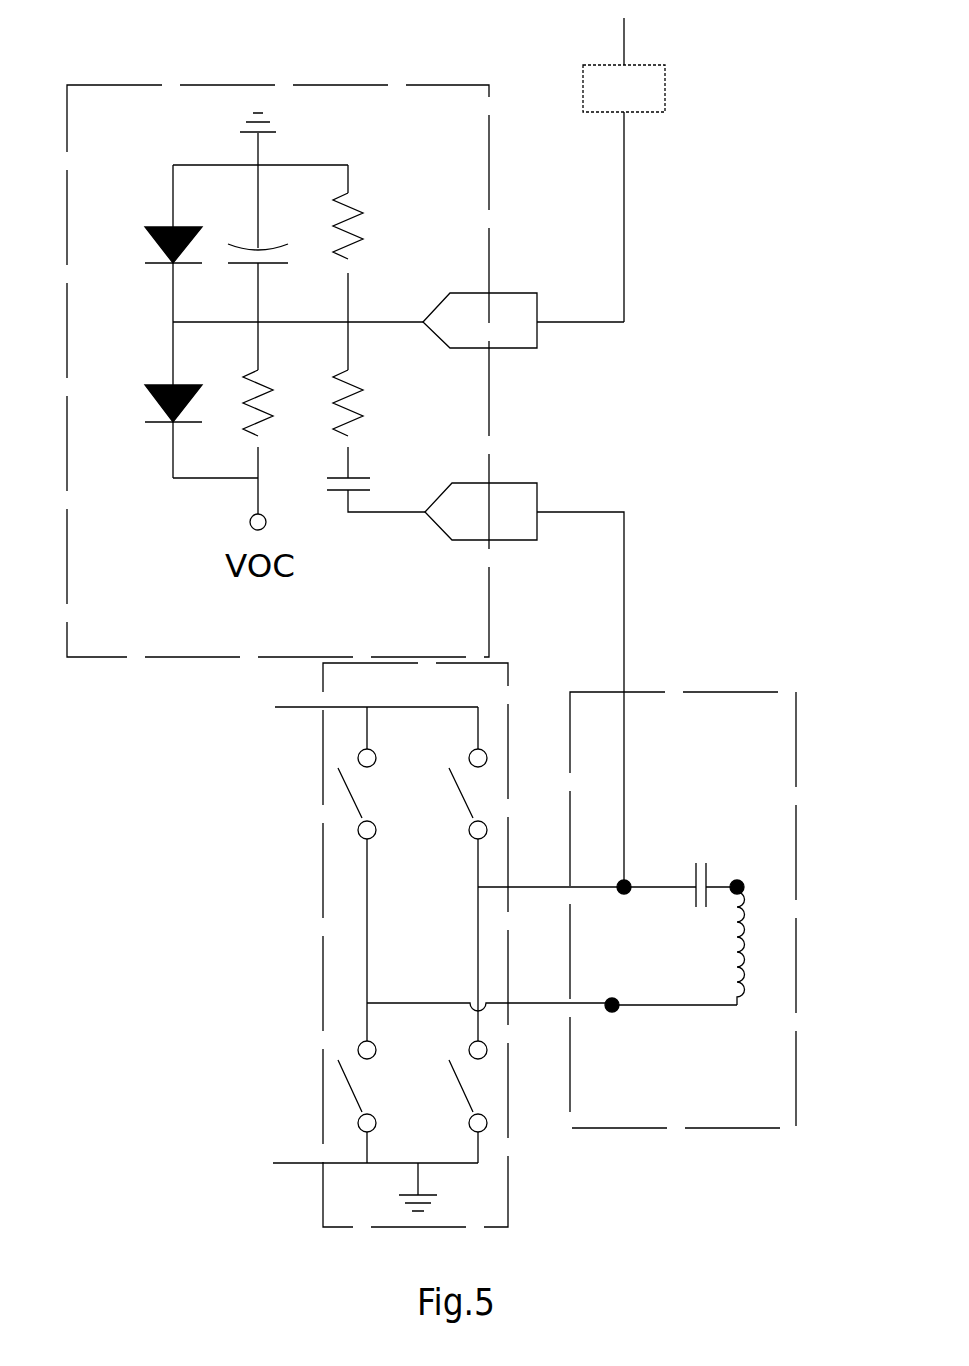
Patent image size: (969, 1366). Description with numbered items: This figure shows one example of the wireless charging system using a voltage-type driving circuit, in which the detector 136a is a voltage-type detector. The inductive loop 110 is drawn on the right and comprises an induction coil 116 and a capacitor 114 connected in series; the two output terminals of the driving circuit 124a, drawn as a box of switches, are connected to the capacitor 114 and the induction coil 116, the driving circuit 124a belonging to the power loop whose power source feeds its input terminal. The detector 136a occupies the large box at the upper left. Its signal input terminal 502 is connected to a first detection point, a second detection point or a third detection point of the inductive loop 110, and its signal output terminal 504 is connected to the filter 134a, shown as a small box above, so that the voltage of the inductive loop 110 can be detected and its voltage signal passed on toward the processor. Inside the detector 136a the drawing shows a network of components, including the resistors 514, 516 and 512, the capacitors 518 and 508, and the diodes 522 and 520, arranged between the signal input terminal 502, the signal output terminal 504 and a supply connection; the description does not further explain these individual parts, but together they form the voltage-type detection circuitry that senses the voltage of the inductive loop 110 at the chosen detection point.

The detector 136a is at (281, 82).
The filter 134a is at (624, 170).
The resistor 514 is at (355, 207).
The capacitor 518 is at (262, 250).
The diode 522 is at (160, 243).
The resistor 516 is at (264, 425).
The resistor 512 is at (355, 425).
The diode 520 is at (160, 400).
The capacitor 508 is at (343, 492).
The signal output terminal 504 is at (537, 348).
The signal input terminal 502 is at (537, 540).
The inductive loop 110 is at (712, 697).
The driving circuit 124a is at (323, 920).
The capacitor 114 is at (708, 880).
The induction coil 116 is at (745, 975).